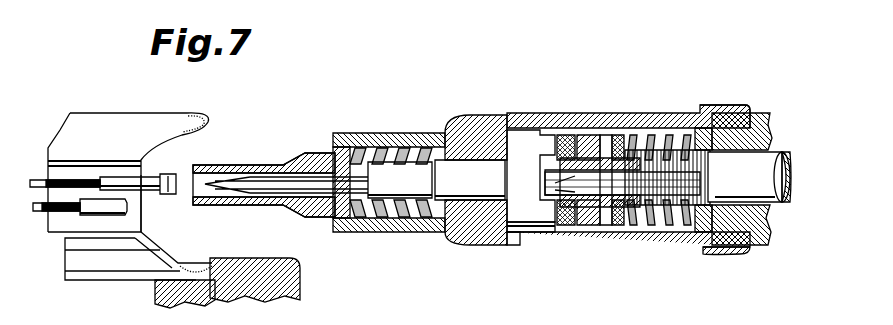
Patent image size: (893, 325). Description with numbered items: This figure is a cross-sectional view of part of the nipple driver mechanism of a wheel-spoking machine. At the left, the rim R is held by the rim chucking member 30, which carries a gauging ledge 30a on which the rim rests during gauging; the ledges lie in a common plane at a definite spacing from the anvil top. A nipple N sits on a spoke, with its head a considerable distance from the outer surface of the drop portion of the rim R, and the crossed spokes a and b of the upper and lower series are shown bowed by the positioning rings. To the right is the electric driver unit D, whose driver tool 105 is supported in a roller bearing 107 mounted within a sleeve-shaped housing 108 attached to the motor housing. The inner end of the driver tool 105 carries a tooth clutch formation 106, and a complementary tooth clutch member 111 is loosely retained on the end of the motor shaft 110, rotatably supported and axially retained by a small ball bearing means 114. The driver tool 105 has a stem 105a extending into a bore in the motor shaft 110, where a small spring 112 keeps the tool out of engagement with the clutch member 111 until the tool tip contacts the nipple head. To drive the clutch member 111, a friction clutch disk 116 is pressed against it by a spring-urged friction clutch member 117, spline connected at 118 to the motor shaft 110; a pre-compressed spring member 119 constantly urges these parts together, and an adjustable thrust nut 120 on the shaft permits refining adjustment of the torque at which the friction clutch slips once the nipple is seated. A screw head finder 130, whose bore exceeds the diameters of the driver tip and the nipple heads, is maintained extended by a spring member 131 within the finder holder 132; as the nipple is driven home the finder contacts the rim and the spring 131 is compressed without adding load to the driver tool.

The rim R is at (147, 112).
The spoke of upper series a is at (48, 183).
The spoke of lower series b is at (48, 207).
The nipple N is at (150, 192).
The rim chucking member 30 is at (300, 276).
The gauging ledge 30a is at (212, 302).
The screw head finder 130 is at (250, 165).
The driver tool 105 is at (303, 152).
The stem 105a is at (517, 234).
The finder holder 132 is at (346, 133).
The spring member 131 is at (384, 150).
The roller bearing 107 is at (453, 158).
The tooth clutch formation 106 is at (533, 129).
The tooth clutch member 111 is at (564, 128).
The sleeve-shaped housing 108 is at (598, 128).
The ball bearing means 114 is at (575, 233).
The friction clutch disk 116 is at (597, 233).
The friction clutch member 117 is at (633, 128).
The spline connection 118 is at (613, 172).
The spring member 119 is at (653, 128).
The spring 112 is at (656, 128).
The adjustable thrust nut 120 is at (700, 240).
The motor shaft 110 is at (771, 163).
The electric driver unit D is at (762, 114).